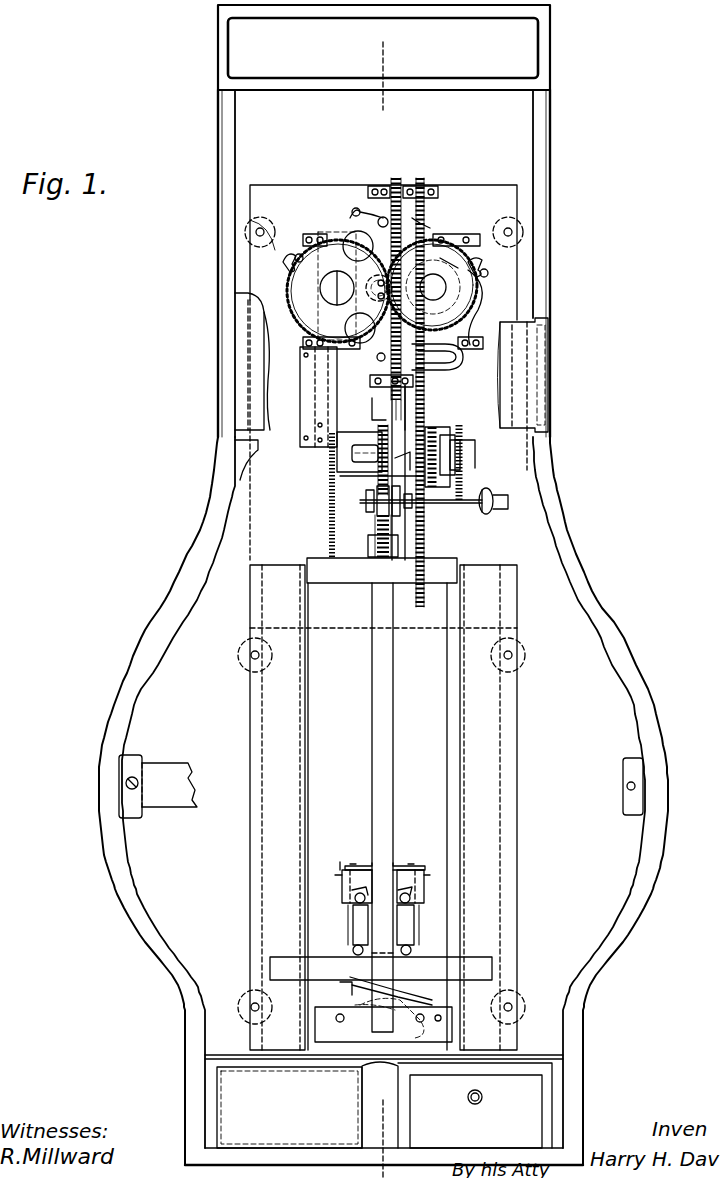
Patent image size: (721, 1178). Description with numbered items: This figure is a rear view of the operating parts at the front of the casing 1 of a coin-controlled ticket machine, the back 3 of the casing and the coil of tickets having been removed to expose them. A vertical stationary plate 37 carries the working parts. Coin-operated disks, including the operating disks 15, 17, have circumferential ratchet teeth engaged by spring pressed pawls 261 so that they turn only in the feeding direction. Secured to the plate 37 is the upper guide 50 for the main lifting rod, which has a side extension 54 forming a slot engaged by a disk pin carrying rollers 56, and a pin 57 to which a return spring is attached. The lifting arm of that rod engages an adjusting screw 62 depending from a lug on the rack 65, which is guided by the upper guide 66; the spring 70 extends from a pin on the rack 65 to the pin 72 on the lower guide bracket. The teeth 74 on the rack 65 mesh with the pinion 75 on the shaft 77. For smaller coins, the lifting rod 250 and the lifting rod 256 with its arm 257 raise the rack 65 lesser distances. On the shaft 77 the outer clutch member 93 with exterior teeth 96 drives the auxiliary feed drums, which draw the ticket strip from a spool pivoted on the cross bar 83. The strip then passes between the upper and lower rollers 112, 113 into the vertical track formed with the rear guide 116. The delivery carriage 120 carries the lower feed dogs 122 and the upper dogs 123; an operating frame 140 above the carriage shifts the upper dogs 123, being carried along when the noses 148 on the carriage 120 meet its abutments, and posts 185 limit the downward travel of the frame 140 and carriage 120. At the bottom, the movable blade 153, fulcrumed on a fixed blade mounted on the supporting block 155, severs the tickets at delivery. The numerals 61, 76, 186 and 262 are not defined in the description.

The casing 1 is at (572, 556).
The back 3 is at (384, 67).
The operating disk 15 is at (485, 274).
The operating disk 17 is at (300, 280).
The vertical stationary plate 37 is at (278, 205).
The upper guide 50 is at (386, 188).
The side extension 54 is at (455, 360).
The rollers 56 is at (383, 222).
The pin 57 is at (403, 186).
The slide bar 61 is at (372, 407).
The adjusting screw 62 is at (440, 412).
The rack 65 is at (435, 392).
The upper guide 66 is at (430, 187).
The spring 70 is at (418, 222).
The pin 72 is at (345, 448).
The teeth 74 is at (430, 533).
The pinion 75 is at (437, 490).
The pawl 76 is at (458, 262).
The shaft 77 is at (378, 465).
The cross bar 83 is at (172, 798).
The outer clutch member 93 is at (460, 447).
The exterior teeth 96 is at (448, 458).
The upper roller 112 is at (368, 505).
The lower roller 113 is at (373, 525).
The rear guide 116 is at (388, 772).
The delivery carriage 120 is at (358, 918).
The feed dogs 122 is at (415, 953).
The upper dogs 123 is at (408, 890).
The operating frame 140 is at (412, 872).
The noses 148 is at (400, 866).
The movable blade 153 is at (338, 975).
The supporting block 155 is at (330, 1022).
The posts 185 is at (418, 935).
The lever 186 is at (382, 476).
The lifting rod 250 is at (480, 305).
The lifting rod 256 is at (330, 383).
The arm 257 is at (357, 418).
The spring pressed pawls 261 is at (283, 265).
The pawl 262 is at (478, 268).